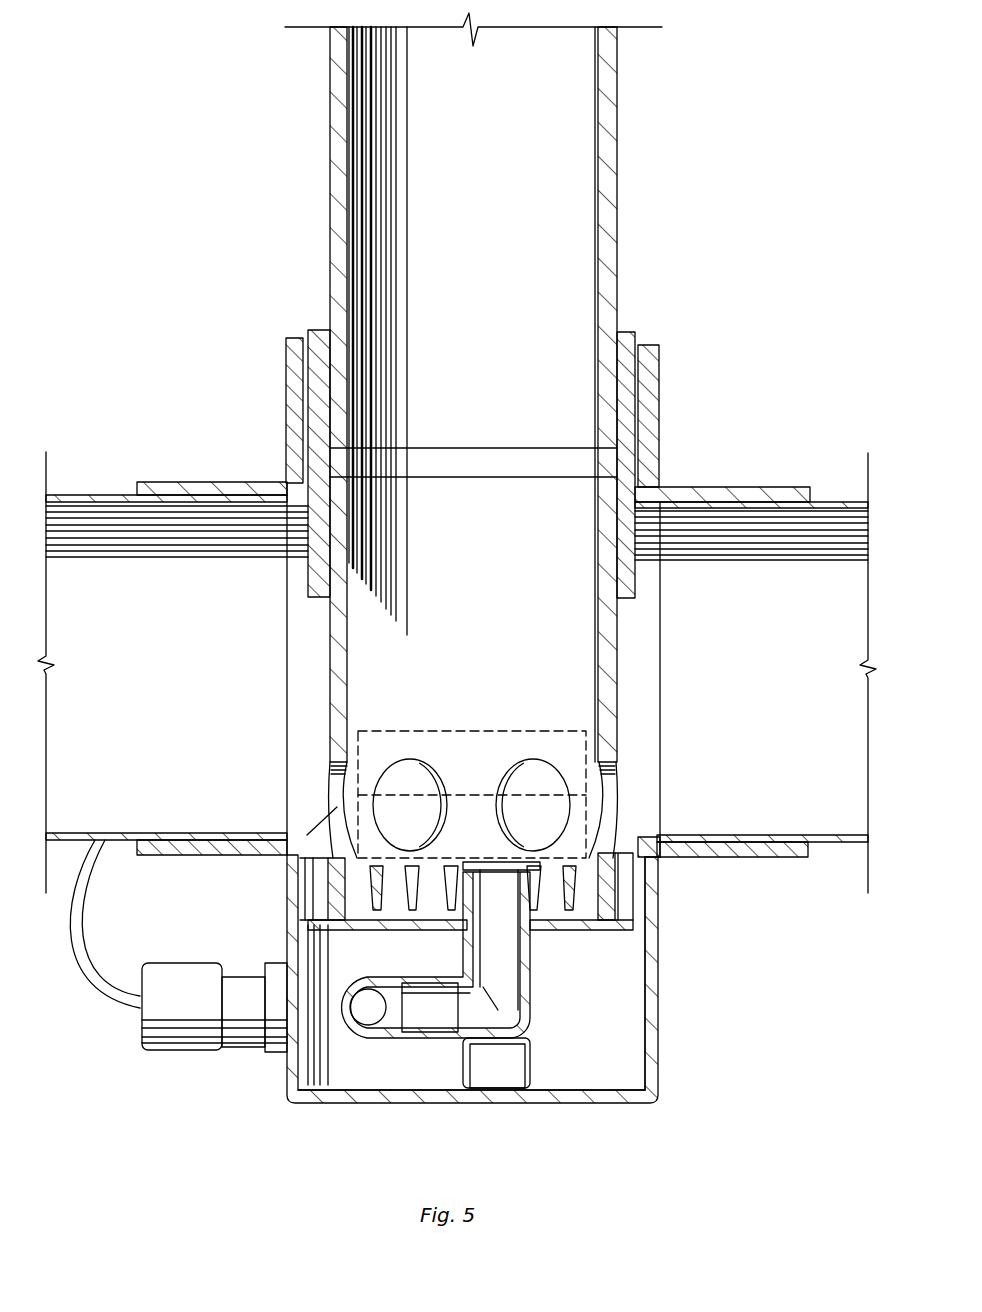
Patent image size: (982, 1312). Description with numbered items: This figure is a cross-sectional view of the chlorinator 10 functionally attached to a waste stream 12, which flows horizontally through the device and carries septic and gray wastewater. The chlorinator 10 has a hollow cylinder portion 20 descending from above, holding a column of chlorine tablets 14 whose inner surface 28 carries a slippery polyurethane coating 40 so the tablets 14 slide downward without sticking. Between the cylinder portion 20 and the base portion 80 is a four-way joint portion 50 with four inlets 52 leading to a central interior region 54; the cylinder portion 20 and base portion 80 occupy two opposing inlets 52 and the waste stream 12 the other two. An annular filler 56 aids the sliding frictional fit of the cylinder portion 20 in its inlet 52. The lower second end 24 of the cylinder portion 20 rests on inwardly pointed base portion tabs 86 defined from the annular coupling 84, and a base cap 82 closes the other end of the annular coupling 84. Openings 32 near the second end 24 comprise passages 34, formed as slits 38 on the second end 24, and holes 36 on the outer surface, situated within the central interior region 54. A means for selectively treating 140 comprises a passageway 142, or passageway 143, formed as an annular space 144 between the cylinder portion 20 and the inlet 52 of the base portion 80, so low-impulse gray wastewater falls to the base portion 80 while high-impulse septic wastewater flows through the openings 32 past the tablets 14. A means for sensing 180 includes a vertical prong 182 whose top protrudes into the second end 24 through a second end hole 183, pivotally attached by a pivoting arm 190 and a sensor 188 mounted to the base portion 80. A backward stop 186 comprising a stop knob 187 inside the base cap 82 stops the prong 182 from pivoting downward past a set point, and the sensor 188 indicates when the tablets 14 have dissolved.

The chlorinator 10 is at (778, 147).
The waste stream 12 is at (75, 494).
The chlorine tablets 14 is at (358, 748).
The cylinder portion 20 is at (286, 129).
The second end 24 is at (312, 922).
The inner surface 28 is at (598, 160).
The openings 32 is at (466, 727).
The passages 34 is at (361, 906).
The holes 36 is at (343, 768).
The slits 38 is at (545, 880).
The coating 40 is at (598, 92).
The 4-way joint portion 50 is at (733, 368).
The inlets 52 is at (641, 344).
The central interior region 54 is at (297, 659).
The annular filler 56 is at (626, 331).
The base portion 80 is at (208, 1116).
The base cap 82 is at (360, 1103).
The annular coupling 84 is at (640, 1010).
The base portion tabs 86 is at (352, 929).
The means for selectively treating 140 is at (281, 810).
The passageway 142 is at (320, 888).
The passageway 143 is at (300, 910).
The annular space 144 is at (312, 868).
The means for sensing 180 is at (551, 1021).
The prong 182 is at (531, 978).
The cylinder portion second end hole 183 is at (432, 875).
The backward stop 186 is at (531, 1063).
The stop knob 187 is at (463, 1060).
The sensor 188 is at (141, 1030).
The pivoting arm 190 is at (368, 1013).